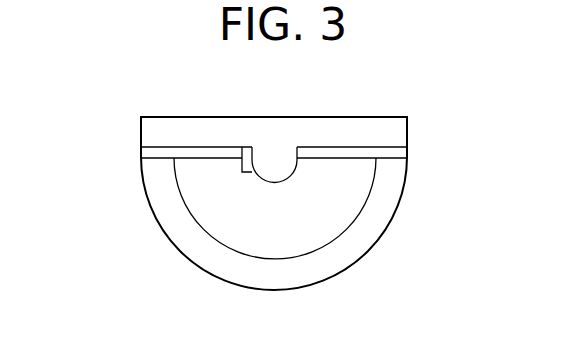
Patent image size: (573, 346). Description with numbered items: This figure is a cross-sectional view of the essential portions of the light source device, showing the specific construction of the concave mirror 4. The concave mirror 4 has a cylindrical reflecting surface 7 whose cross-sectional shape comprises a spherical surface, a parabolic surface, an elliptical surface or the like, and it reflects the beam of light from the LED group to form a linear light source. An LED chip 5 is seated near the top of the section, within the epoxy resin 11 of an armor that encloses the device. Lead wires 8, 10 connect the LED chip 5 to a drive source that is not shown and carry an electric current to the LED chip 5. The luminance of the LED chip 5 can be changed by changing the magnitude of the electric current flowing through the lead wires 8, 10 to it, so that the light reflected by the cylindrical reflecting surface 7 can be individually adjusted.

The concave mirror 4 is at (146, 211).
The LED chip 5 is at (247, 160).
The cylindrical reflecting surface 7 is at (327, 247).
The lead wire 8 is at (293, 172).
The lead wire 10 is at (372, 150).
The epoxy resin of an armor 11 is at (337, 128).